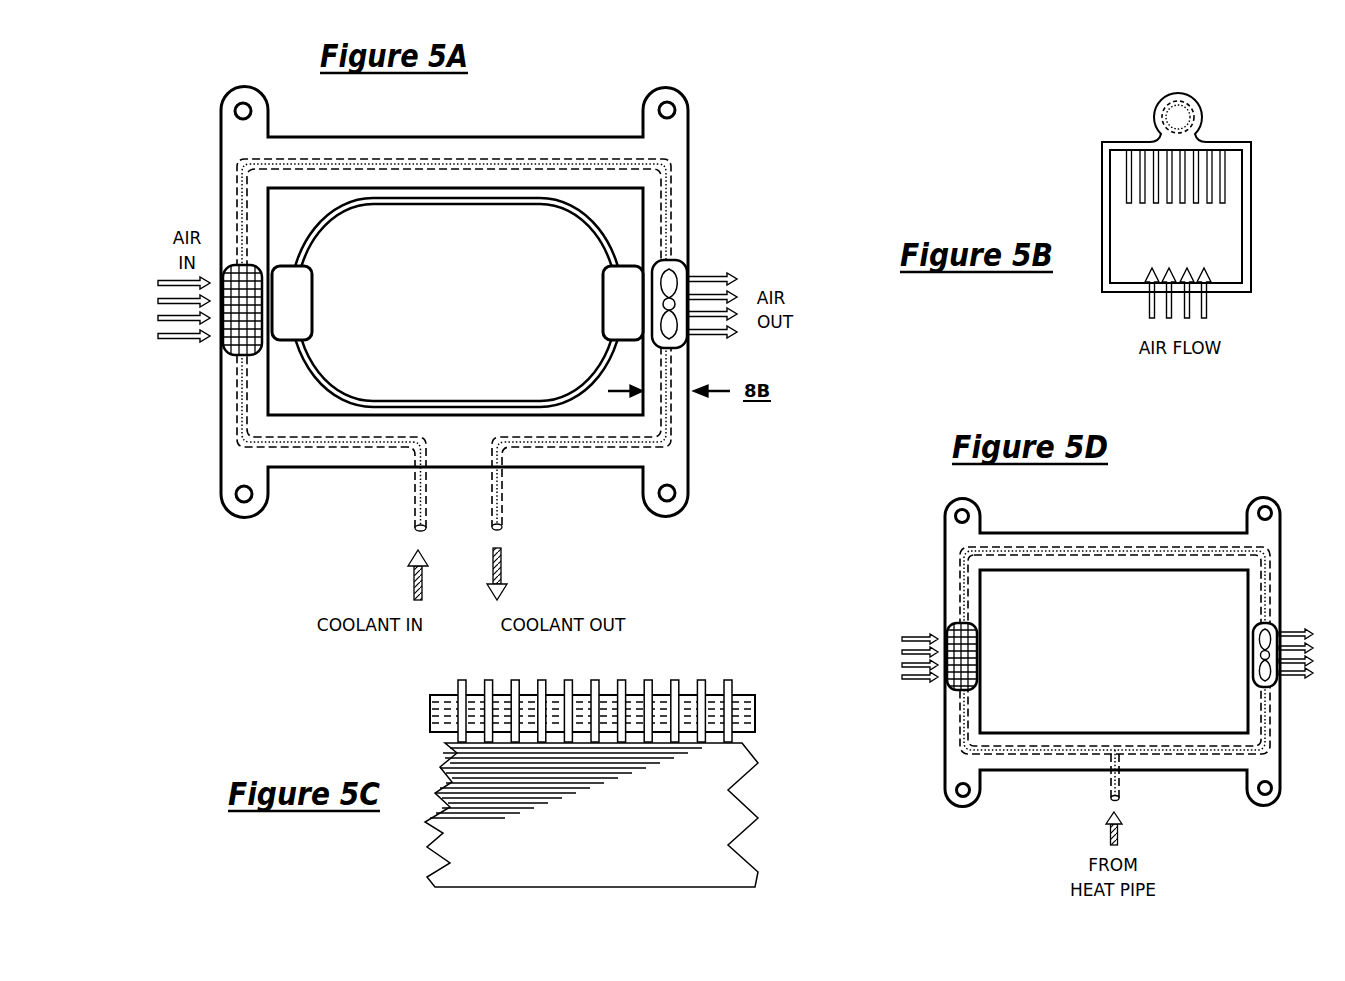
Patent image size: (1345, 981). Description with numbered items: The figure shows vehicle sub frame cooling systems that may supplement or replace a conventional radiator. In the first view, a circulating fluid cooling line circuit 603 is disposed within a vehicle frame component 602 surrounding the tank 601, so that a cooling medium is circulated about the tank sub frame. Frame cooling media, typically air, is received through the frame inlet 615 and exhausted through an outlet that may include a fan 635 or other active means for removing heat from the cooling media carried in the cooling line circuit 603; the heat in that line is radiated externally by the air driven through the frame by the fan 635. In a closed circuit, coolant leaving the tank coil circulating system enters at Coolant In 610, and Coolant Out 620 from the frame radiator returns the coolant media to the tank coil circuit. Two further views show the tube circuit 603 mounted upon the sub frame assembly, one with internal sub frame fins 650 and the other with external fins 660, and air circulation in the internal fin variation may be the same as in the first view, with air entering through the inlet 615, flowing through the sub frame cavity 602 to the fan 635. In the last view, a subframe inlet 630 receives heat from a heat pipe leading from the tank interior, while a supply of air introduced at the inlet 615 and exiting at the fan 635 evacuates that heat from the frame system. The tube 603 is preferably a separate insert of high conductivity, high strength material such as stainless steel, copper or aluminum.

In FIG. 5A, the tank 601 is at (455, 400).
In FIG. 5A, the vehicle frame component 602 is at (572, 137).
In FIG. 5B, the vehicle frame component 602 is at (1102, 187).
In FIG. 5C, the vehicle frame component 602 is at (433, 856).
In FIG. 5D, the vehicle frame component 602 is at (1194, 533).
In FIG. 5A, the circulating fluid cooling line circuit 603 is at (558, 445).
In FIG. 5B, the circulating fluid cooling line circuit 603 is at (1180, 117).
In FIG. 5C, the circulating fluid cooling line circuit 603 is at (431, 708).
In FIG. 5D, the circulating fluid cooling line circuit 603 is at (1186, 753).
In FIG. 5A, the Coolant In 610 is at (415, 507).
In FIG. 5A, the frame inlet 615 is at (242, 345).
In FIG. 5D, the frame inlet 615 is at (965, 692).
In FIG. 5A, the Coolant Out 620 is at (502, 513).
In FIG. 5D, the subframe inlet 630 is at (1110, 788).
In FIG. 5A, the fan 635 is at (688, 267).
In FIG. 5D, the fan 635 is at (1263, 657).
In FIG. 5B, the internal sub frame fins 650 is at (1182, 203).
In FIG. 5C, the external fins 660 is at (731, 700).